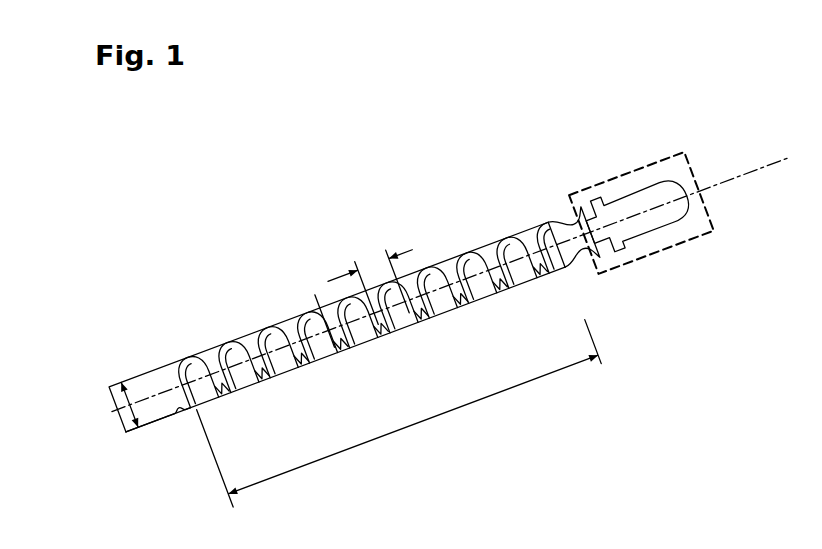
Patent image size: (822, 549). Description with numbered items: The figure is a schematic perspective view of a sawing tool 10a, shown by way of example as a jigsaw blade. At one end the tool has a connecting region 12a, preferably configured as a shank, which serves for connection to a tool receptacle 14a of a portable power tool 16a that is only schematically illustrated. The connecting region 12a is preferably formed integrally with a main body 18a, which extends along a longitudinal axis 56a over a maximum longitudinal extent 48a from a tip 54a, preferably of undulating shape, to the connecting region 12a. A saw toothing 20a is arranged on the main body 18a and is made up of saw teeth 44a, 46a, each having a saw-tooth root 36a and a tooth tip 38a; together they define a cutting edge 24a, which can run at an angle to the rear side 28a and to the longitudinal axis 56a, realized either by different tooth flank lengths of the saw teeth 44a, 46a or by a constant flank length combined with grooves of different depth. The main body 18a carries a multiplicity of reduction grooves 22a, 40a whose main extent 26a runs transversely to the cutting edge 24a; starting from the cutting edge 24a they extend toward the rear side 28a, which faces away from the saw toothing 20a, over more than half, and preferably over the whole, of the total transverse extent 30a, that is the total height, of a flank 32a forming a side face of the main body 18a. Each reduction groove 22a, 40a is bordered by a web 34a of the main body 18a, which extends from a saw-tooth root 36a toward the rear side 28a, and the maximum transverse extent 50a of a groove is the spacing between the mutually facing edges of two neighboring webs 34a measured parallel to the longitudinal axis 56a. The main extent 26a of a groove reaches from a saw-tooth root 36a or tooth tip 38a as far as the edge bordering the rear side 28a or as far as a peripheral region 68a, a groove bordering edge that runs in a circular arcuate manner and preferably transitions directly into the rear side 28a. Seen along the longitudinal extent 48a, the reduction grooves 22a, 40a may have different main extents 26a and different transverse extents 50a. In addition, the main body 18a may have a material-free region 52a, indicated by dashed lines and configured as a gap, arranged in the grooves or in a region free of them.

The sawing tool 10a is at (150, 296).
The connecting region 12a is at (676, 239).
The tool receptacle 14a is at (640, 170).
The portable power tool 16a is at (673, 142).
The main body 18a is at (521, 212).
The saw toothing 20a is at (158, 424).
The reduction groove 22a is at (478, 302).
The cutting edge 24a is at (175, 418).
The main extent 26a is at (316, 288).
The rear side 28a is at (422, 268).
The total transverse extent 30a is at (125, 407).
The flank 32a is at (232, 337).
The web 34a is at (283, 373).
The saw-tooth root 36a is at (250, 383).
The tooth tip 38a is at (388, 334).
The reduction groove 40a is at (474, 275).
The saw tooth 44a is at (277, 378).
The saw tooth 46a is at (386, 334).
The maximum longitudinal extent 48a is at (414, 425).
The maximum transverse extent 50a is at (368, 262).
The material-free region 52a is at (476, 240).
The tip 54a is at (160, 357).
The longitudinal axis 56a is at (758, 168).
The peripheral region 68a is at (313, 322).